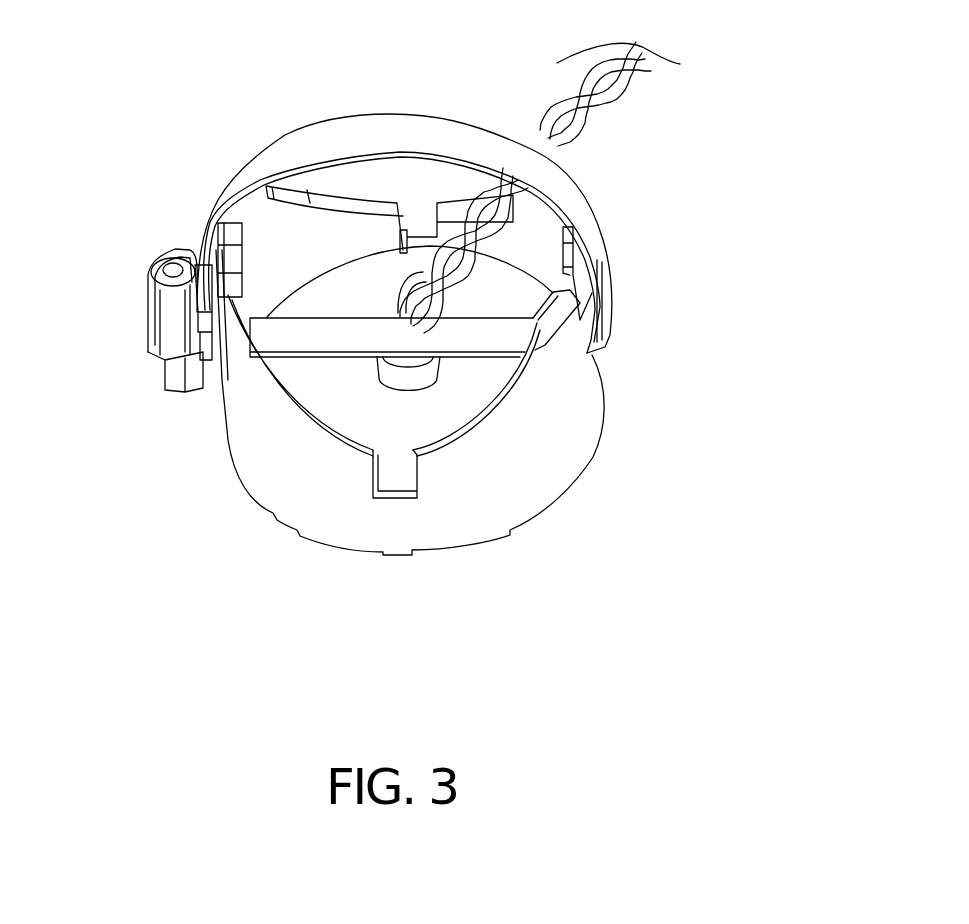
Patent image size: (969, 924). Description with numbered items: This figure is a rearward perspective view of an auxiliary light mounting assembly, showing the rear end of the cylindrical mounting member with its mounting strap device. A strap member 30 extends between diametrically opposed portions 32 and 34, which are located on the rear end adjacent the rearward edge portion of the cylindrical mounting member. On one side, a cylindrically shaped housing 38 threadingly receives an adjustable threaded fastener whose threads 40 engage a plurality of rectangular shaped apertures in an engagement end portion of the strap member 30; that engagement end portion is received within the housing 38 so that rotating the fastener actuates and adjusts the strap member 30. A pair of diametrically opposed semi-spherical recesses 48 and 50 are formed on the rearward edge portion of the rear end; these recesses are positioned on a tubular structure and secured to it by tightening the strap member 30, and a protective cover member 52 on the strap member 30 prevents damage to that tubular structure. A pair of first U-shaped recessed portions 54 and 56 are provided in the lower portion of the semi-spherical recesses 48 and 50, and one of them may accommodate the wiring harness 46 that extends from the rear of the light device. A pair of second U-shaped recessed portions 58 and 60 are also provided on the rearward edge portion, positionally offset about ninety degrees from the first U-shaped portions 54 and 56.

The strap member 30 is at (299, 120).
The diametrically opposed portion 32 is at (217, 386).
The diametrically opposed portion 34 is at (623, 345).
The cylindrically shaped housing 38 is at (133, 310).
The threads 40 is at (172, 268).
The wiring harness 46 is at (571, 97).
The semi-spherical recess 48 is at (448, 442).
The semi-spherical recess 50 is at (348, 195).
The protective cover member 52 is at (550, 193).
The first U-shaped recessed portion 54 is at (377, 490).
The first U-shaped recessed portion 56 is at (403, 243).
The second U-shaped recessed portion 58 is at (577, 260).
The second U-shaped recessed portion 60 is at (230, 258).